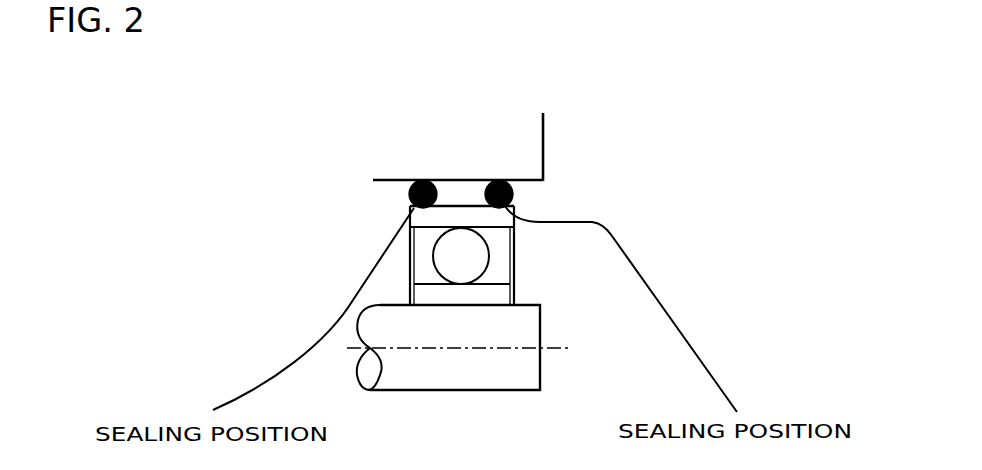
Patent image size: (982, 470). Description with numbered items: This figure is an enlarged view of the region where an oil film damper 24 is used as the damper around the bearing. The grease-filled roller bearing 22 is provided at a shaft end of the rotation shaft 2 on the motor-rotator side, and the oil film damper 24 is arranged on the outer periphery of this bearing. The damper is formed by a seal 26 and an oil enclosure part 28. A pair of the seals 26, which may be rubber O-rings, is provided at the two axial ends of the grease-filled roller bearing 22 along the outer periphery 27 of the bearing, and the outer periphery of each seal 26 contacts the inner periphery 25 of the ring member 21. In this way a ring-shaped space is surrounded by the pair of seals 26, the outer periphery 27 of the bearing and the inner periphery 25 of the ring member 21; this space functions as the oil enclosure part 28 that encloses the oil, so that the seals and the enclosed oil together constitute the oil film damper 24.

The rotation shaft 2 is at (505, 378).
The ring member 21 is at (395, 155).
The grease-filled roller bearing 22 is at (468, 258).
The oil film damper 24 is at (452, 173).
The inner periphery of the ring member 25 is at (384, 184).
The seal 26 is at (511, 193).
The outer periphery of the grease-filled roller bearing 27 is at (473, 200).
The oil enclosure part 28 is at (462, 193).